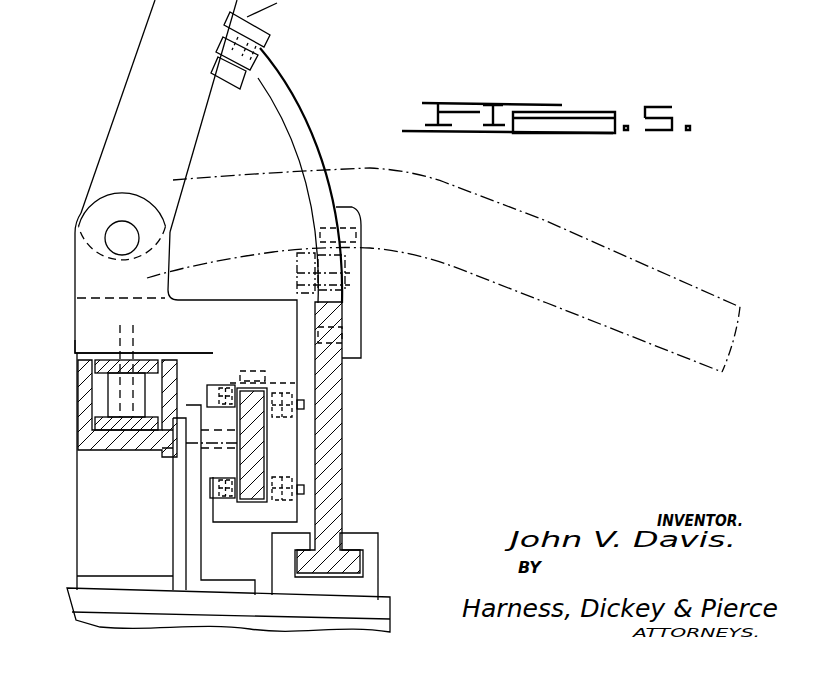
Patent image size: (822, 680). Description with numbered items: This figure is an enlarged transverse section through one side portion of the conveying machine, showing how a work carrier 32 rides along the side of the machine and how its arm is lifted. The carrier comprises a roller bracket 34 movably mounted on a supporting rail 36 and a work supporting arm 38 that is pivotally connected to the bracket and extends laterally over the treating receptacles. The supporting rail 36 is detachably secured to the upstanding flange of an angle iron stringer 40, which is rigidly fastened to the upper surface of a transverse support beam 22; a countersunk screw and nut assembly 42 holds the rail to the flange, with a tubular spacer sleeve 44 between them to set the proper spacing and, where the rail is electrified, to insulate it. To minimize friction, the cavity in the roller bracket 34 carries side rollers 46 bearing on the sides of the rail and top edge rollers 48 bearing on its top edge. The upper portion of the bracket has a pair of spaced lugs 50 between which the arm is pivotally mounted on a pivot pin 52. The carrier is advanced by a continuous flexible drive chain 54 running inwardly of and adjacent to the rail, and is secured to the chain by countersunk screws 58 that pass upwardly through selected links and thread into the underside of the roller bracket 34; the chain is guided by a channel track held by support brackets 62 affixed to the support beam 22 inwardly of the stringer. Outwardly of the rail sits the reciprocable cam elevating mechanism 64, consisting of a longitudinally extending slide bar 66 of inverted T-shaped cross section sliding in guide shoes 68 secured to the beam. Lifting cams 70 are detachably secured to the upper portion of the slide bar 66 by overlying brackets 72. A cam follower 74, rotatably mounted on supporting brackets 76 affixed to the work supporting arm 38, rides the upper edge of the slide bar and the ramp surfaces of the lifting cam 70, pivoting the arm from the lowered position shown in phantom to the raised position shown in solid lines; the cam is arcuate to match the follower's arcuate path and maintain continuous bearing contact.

The transverse support beams 22 is at (375, 610).
The work carrier 32 is at (72, 288).
The roller bracket 34 is at (92, 328).
The supporting rail 36 is at (245, 505).
The work supporting arm 38 is at (130, 122).
The angle iron stringer 40 is at (193, 587).
The countersunk screw and nut assembly 42 is at (178, 440).
The tubular spacer sleeve 44 is at (222, 455).
The side rollers 46 is at (210, 400).
The top edge rollers 48 is at (255, 365).
The spaced lugs 50 is at (100, 210).
The pivot pin 52 is at (120, 238).
The drive chain 54 is at (110, 400).
The countersunk screws 58 is at (97, 382).
The support brackets 62 is at (92, 522).
The reciprocable cam elevating mechanism 64 is at (344, 386).
The slide bar 66 is at (335, 440).
The guide shoes 68 is at (370, 545).
The lifting cam 70 is at (302, 113).
The overlying brackets 72 is at (358, 312).
The cam follower 74 is at (268, 57).
The supporting brackets 76 is at (222, 72).